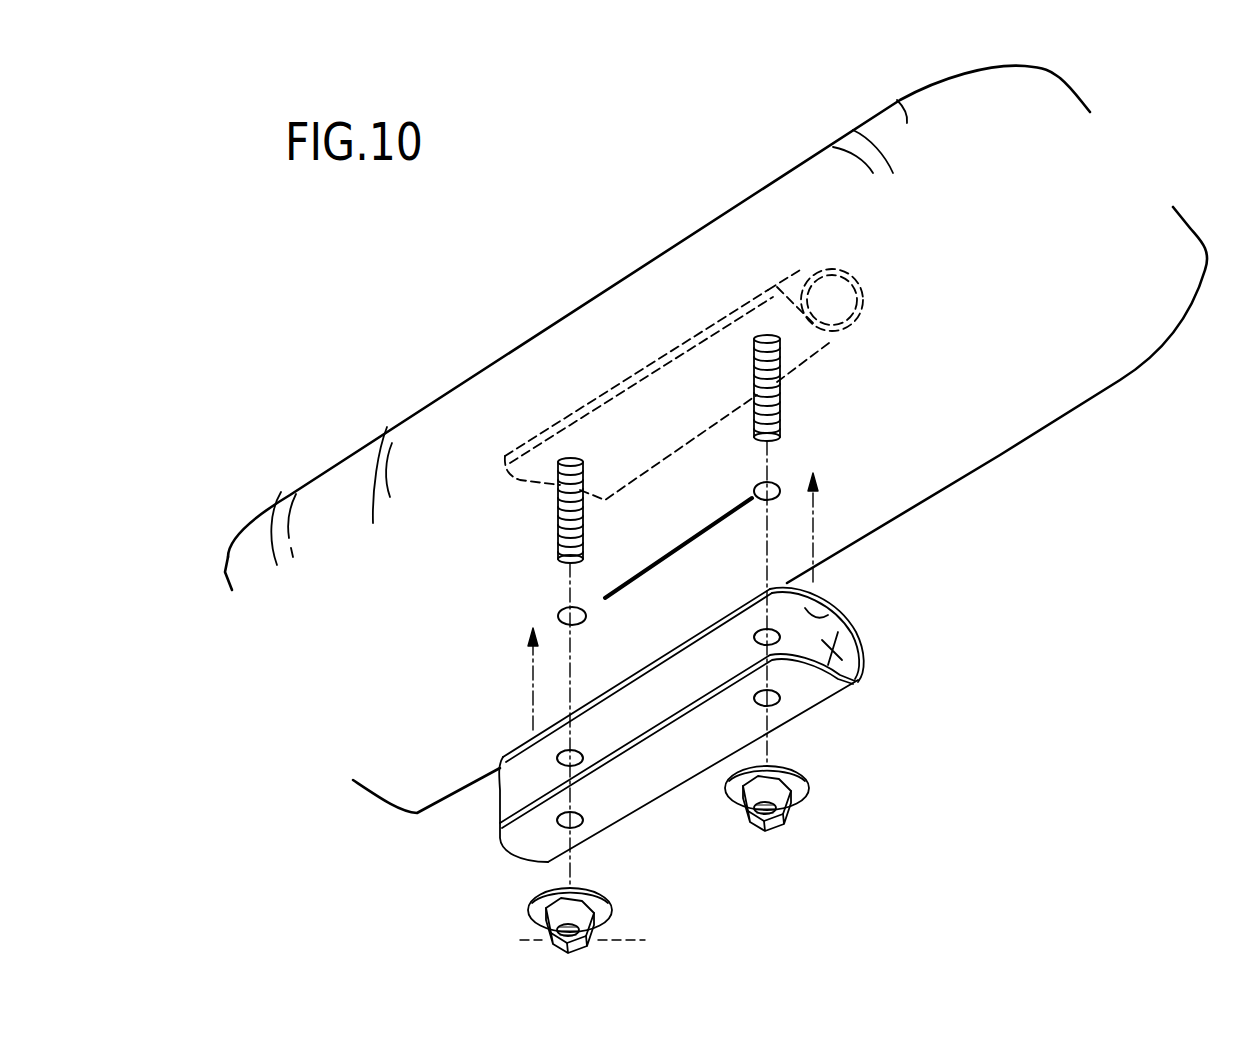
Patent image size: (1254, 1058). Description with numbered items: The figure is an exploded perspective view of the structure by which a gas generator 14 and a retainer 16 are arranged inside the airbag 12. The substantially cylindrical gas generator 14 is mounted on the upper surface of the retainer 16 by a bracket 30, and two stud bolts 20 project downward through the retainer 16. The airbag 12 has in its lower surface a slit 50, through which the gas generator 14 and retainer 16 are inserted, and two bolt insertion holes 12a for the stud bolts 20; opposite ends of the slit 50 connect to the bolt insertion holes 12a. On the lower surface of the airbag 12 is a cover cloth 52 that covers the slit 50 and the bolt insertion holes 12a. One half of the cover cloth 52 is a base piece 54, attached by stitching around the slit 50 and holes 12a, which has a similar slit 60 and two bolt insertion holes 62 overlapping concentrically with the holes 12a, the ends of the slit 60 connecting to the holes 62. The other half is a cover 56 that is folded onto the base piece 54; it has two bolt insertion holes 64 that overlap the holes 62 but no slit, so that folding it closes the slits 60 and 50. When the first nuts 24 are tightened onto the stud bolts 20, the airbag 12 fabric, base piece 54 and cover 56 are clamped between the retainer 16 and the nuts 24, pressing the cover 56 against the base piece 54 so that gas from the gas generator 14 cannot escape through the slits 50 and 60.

The airbag 12 is at (893, 100).
The bolt insertion holes 12a is at (498, 604).
The gas generator 14 is at (835, 308).
The retainer 16 is at (600, 385).
The stud bolts 20 is at (745, 362).
The first nuts 24 is at (610, 933).
The bracket 30 is at (822, 278).
The slit 50 is at (700, 540).
The cover cloth 52 is at (868, 651).
The base piece 54 is at (828, 616).
The cover 56 is at (645, 783).
The slit 60 is at (660, 692).
The bolt insertion holes 62 is at (898, 685).
The bolt insertion holes 64 is at (835, 745).